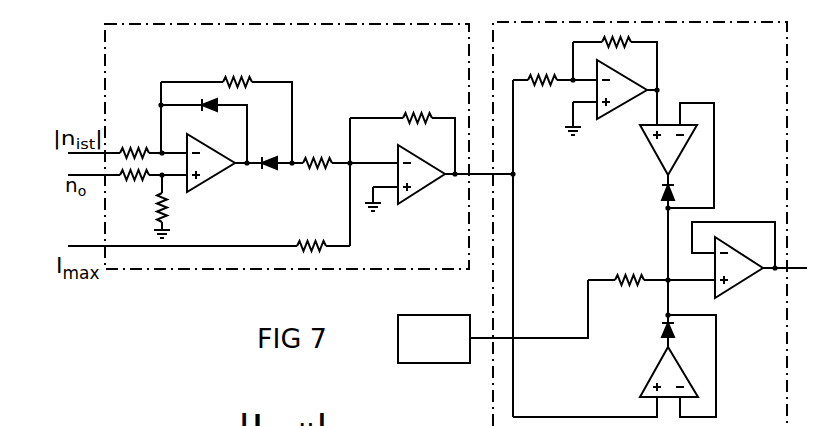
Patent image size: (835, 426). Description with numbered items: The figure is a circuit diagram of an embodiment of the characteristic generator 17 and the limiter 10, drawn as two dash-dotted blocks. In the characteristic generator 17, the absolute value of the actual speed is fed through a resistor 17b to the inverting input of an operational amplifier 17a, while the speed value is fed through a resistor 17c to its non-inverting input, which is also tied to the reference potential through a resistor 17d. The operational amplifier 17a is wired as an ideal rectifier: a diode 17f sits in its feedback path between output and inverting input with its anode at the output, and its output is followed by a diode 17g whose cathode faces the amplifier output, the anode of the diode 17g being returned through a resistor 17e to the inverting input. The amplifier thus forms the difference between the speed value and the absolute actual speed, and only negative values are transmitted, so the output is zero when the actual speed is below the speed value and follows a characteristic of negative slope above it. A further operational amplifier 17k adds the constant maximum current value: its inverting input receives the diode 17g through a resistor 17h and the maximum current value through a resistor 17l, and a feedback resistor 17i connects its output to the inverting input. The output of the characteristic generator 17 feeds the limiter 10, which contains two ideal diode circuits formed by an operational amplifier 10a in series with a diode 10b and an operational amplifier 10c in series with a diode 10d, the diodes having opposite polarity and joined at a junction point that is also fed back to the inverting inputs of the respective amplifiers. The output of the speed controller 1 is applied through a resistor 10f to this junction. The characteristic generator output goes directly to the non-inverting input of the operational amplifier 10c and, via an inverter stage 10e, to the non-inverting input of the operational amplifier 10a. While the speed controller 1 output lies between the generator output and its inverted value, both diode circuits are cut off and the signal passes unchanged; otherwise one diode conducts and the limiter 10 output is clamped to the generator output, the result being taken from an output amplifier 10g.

The speed controller 1 is at (434, 339).
The limiter 10 is at (492, 388).
The operational amplifier 10a is at (654, 150).
The diode 10b is at (662, 196).
The operational amplifier 10c is at (652, 375).
The diode 10d is at (662, 333).
The inverter stage 10e is at (605, 118).
The resistor 10f is at (634, 272).
The output amplifier 10g is at (728, 286).
The characteristic generator 17 is at (164, 270).
The operational amplifier 17a is at (205, 178).
The resistor 17b is at (127, 149).
The resistor 17c is at (143, 182).
The resistor 17d is at (170, 215).
The resistor 17e is at (244, 80).
The diode 17f is at (210, 110).
The diode 17g is at (270, 170).
The resistor 17h is at (310, 156).
The feedback resistor 17i is at (414, 114).
The operational amplifier 17k is at (410, 199).
The resistor 17l is at (307, 242).